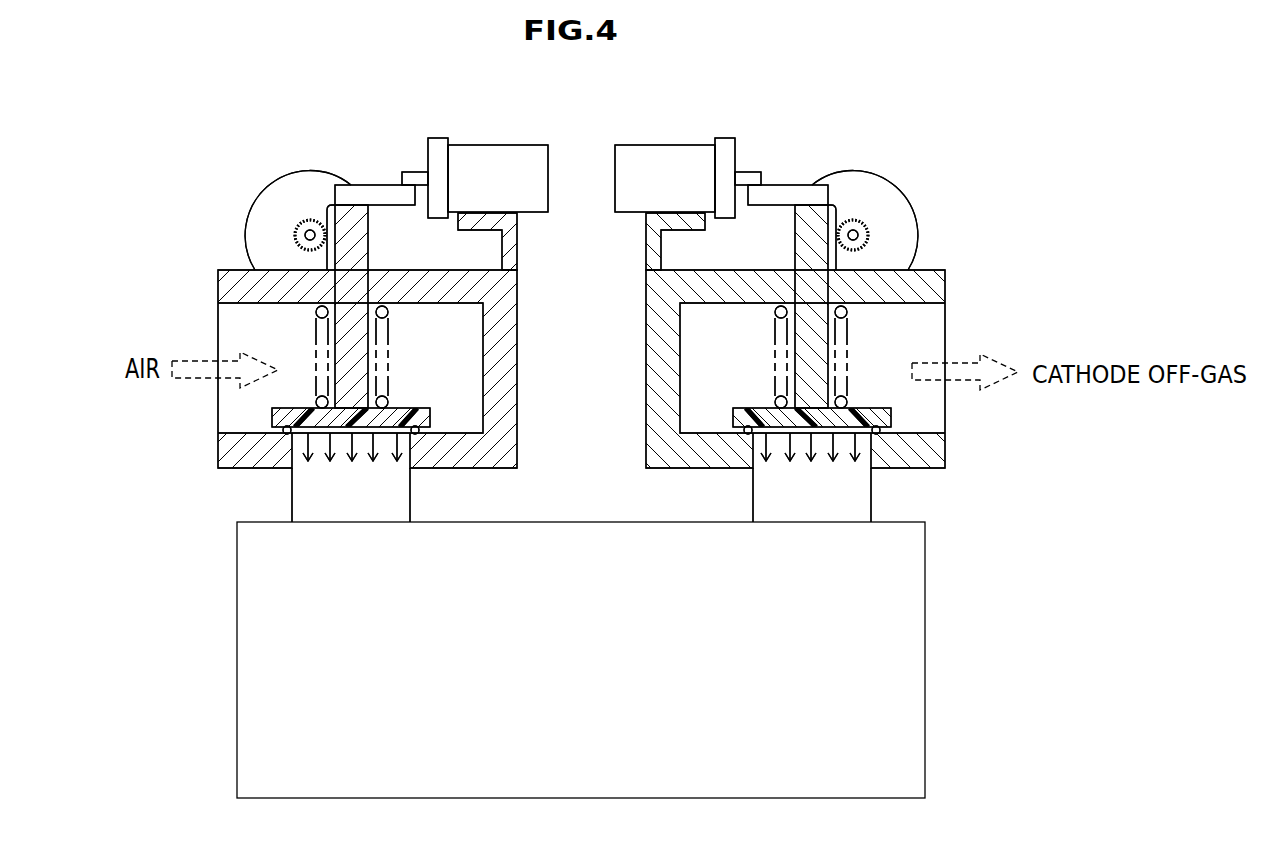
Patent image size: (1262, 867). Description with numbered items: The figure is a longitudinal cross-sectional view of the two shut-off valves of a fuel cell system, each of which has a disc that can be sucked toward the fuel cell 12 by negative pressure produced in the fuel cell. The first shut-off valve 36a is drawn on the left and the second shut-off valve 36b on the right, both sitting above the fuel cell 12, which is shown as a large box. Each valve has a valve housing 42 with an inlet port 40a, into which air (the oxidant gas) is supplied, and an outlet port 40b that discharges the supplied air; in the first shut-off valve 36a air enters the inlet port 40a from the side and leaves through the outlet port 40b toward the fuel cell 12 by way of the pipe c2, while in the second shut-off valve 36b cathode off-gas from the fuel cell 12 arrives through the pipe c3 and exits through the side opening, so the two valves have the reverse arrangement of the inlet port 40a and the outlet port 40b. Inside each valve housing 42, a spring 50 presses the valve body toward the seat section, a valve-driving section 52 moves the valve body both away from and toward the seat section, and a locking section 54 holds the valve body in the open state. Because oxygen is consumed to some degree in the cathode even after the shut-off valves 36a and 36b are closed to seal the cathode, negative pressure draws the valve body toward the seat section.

The fuel cell 12 is at (581, 660).
The first shut-off valve 36a is at (157, 156).
The second shut-off valve 36b is at (986, 144).
The inlet port 40a is at (240, 305).
The outlet port 40b is at (292, 493).
The valve housing 42 is at (517, 375).
The spring 50 is at (390, 313).
The valve-driving section 52 is at (268, 182).
The locking section 54 is at (498, 142).
The pipe c2 is at (412, 492).
The pipe c3 is at (872, 492).